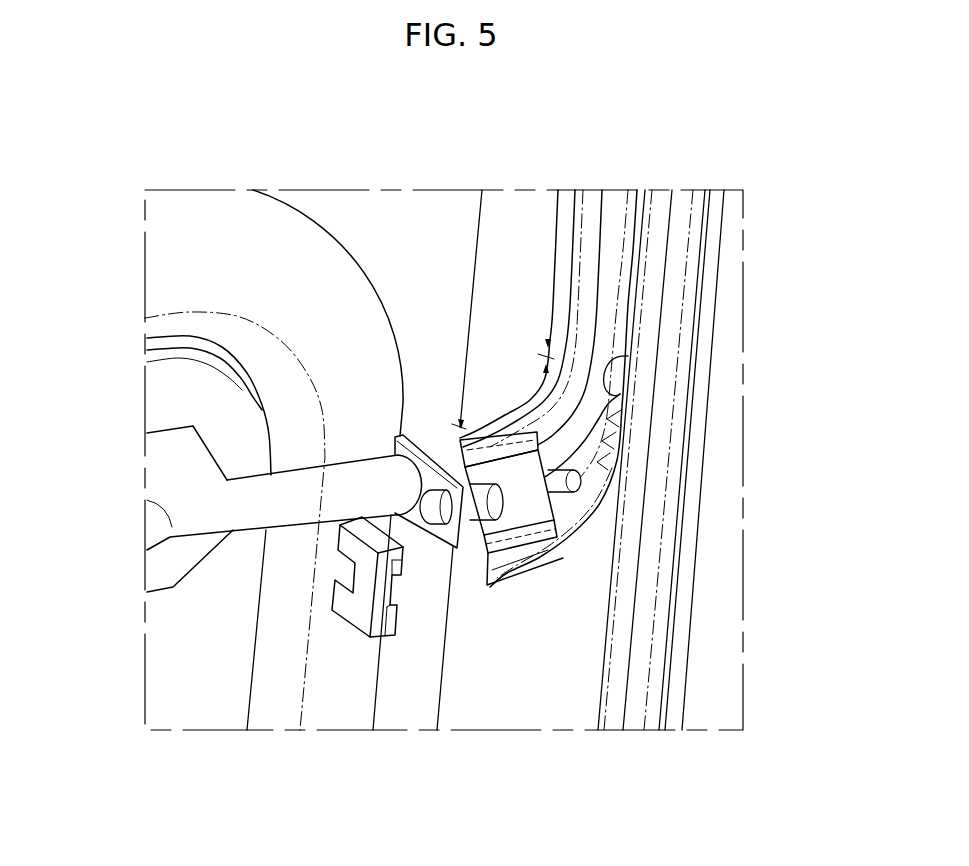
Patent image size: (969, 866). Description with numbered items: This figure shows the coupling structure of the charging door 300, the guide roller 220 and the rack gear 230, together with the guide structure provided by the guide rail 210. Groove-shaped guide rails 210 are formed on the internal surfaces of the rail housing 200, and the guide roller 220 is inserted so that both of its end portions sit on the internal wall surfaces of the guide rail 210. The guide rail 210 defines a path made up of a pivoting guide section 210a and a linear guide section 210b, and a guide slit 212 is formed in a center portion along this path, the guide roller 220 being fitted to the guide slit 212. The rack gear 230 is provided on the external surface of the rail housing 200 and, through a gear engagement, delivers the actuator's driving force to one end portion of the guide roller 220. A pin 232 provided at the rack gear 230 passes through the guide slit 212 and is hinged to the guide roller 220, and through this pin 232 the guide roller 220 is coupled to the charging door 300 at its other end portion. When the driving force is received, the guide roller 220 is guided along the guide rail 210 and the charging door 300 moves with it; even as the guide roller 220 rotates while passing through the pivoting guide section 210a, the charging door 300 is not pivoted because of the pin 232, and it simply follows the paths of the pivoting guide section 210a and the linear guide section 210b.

The rail housing 200 is at (503, 210).
The guide rail 210 is at (624, 334).
The pivoting guide section 210a is at (508, 407).
The linear guide section 210b is at (558, 238).
The guide slit 212 is at (605, 378).
The guide roller 220 is at (662, 637).
The rack gear 230 is at (583, 473).
The pin 232 is at (486, 588).
The charging door 300 is at (160, 695).